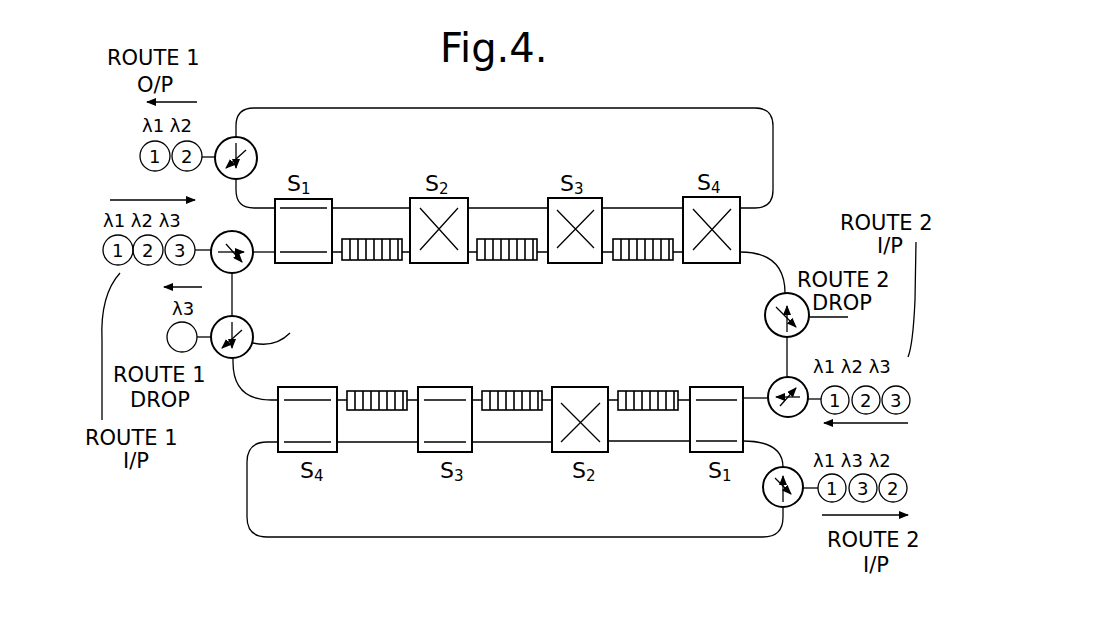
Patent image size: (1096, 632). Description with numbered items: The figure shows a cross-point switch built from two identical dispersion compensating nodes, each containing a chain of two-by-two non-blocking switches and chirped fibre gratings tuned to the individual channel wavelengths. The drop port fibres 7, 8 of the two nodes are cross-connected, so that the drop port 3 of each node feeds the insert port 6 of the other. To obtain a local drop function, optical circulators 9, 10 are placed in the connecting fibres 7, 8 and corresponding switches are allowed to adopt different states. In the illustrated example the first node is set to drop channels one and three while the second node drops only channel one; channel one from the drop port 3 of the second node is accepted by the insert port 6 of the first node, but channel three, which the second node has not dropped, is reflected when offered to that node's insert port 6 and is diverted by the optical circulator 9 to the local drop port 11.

The drop port 3 is at (783, 353).
The insert port 6 is at (766, 253).
The drop port fibre 7 is at (243, 384).
The drop port fibre 8 is at (783, 288).
The optical circulator 9 is at (275, 327).
The optical circulator 10 is at (767, 326).
The local drop port 11 is at (167, 342).